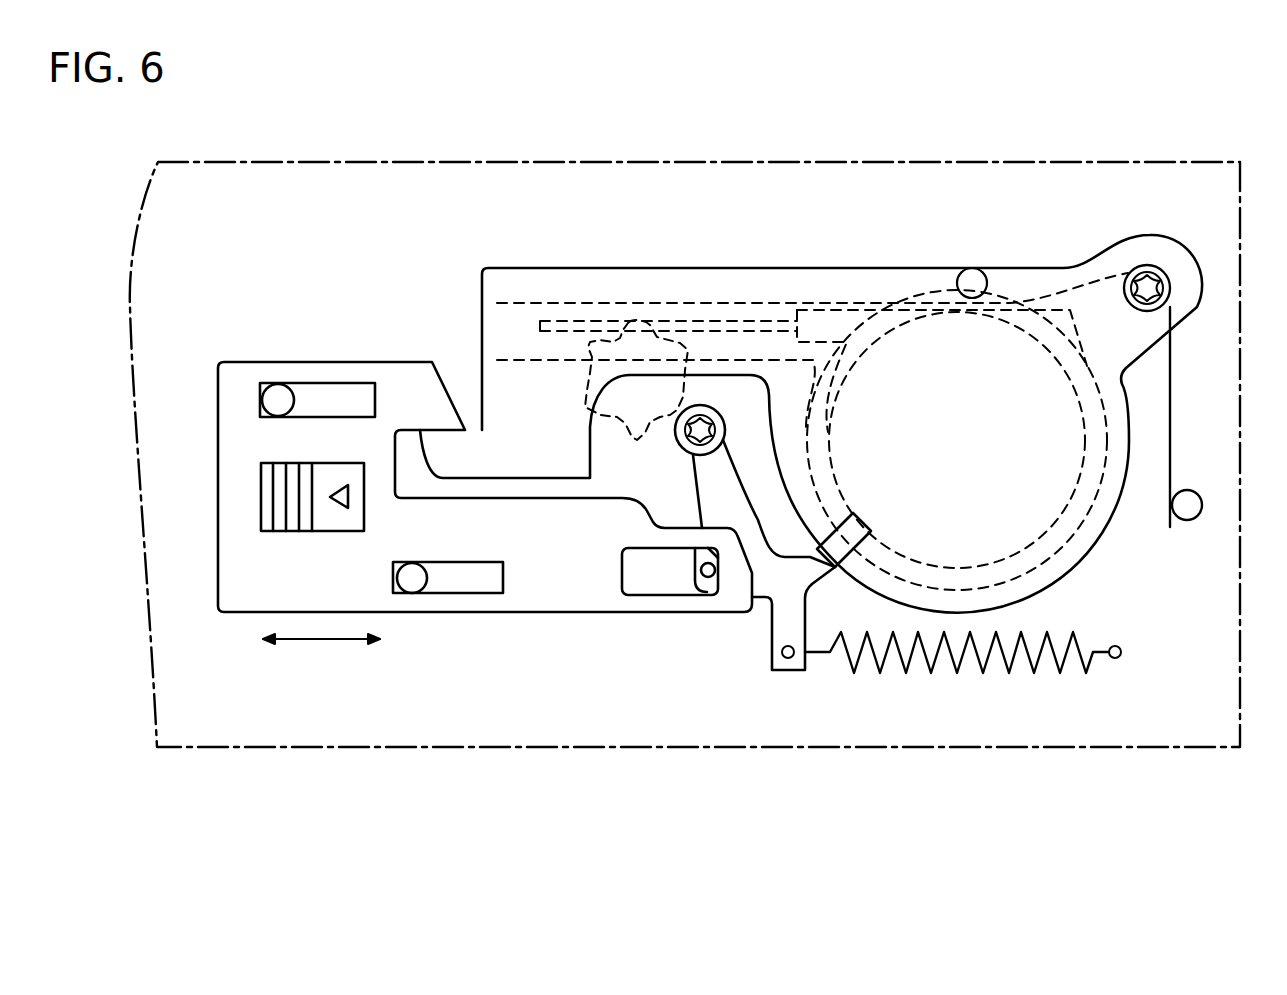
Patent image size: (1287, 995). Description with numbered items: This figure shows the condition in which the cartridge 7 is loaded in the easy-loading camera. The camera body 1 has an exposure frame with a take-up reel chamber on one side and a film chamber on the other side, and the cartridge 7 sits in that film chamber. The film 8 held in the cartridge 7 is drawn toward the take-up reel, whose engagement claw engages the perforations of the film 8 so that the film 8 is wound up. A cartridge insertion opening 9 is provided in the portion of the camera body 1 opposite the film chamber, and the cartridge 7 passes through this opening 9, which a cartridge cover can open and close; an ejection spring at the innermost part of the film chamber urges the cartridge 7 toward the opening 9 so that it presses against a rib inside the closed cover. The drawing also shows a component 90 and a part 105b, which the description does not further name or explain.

The camera body 1 is at (308, 163).
The cartridge 7 is at (1010, 350).
The film 8 is at (680, 330).
The cartridge insertion opening 9 is at (1127, 437).
The cam member 90 is at (612, 336).
The engaging projection 105b is at (866, 532).